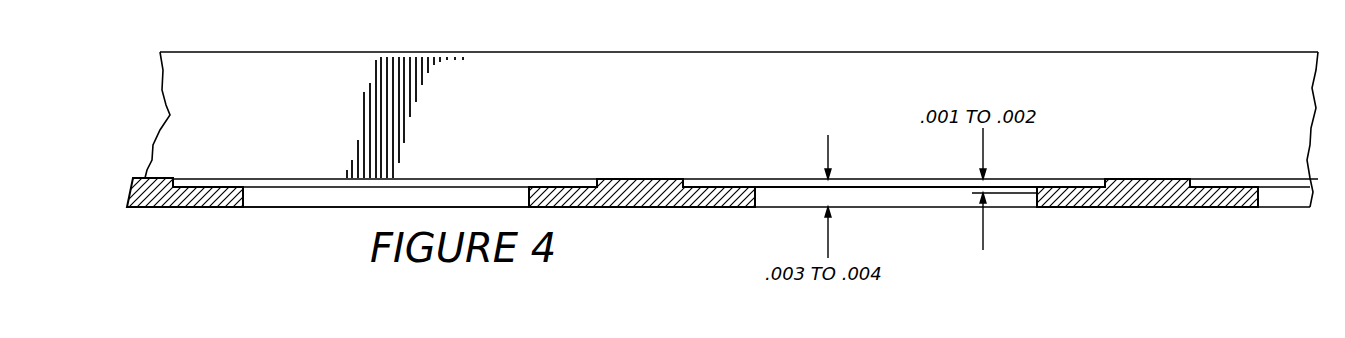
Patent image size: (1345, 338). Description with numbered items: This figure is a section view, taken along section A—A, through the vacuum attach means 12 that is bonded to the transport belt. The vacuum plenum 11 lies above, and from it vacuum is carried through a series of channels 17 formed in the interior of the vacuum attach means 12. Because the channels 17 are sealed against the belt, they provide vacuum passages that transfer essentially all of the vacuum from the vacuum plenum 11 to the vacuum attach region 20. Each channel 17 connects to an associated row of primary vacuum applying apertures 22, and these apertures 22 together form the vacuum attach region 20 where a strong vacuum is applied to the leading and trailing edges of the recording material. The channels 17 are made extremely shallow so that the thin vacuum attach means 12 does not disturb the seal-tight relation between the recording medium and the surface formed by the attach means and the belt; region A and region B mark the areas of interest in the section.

The vacuum plenum 11 is at (968, 52).
The vacuum attach means 12 is at (1177, 160).
The channel 17 is at (313, 187).
The vacuum attach region 20 is at (547, 179).
The primary vacuum applying aperture 22 is at (705, 103).
The section A— A is at (1062, 153).
The region B is at (1023, 223).